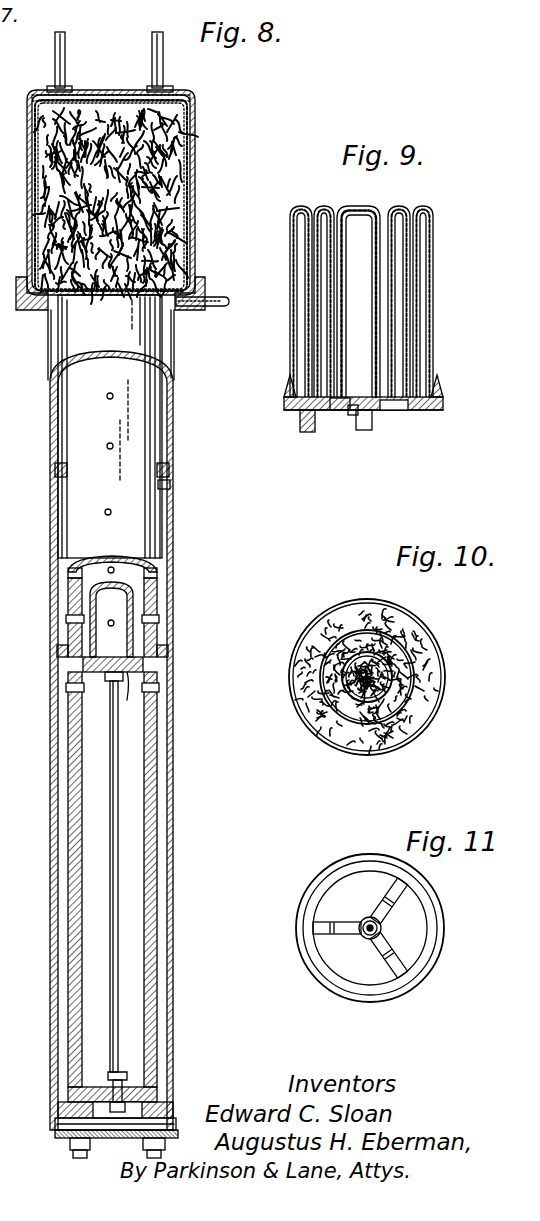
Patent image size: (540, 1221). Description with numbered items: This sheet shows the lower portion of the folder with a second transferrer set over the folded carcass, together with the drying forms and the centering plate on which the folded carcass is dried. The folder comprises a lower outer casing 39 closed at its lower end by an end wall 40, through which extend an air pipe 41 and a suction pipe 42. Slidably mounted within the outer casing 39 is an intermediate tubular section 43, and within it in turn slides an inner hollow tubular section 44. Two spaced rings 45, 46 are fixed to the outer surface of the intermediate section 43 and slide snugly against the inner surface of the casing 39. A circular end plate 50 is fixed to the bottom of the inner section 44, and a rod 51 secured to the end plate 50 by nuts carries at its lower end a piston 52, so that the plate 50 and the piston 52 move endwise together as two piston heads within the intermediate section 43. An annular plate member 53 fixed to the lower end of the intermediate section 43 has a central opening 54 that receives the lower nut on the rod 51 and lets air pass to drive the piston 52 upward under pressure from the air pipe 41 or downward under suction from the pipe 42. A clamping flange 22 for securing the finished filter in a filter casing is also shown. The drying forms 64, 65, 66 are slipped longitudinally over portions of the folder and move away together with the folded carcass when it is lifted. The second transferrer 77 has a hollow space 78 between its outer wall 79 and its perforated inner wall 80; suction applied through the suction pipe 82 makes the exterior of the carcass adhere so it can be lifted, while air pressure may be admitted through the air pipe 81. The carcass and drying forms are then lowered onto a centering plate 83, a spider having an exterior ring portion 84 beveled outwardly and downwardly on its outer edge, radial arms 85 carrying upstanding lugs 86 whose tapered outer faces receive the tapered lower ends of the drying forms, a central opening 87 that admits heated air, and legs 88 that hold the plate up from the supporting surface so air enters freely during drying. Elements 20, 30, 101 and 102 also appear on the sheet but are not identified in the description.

In FIG. 10, the heat storage unit 20 is at (418, 637).
In FIG. 8, the flange 22 is at (205, 288).
In FIG. 9, the flange 22 is at (440, 383).
In FIG. 8, the side tab 30 is at (218, 304).
In FIG. 8, the lower outer casing 39 is at (152, 329).
In FIG. 8, the end wall 40 is at (105, 1138).
In FIG. 8, the air pipe 41 is at (147, 1150).
In FIG. 8, the suction pipe 42 is at (72, 1150).
In FIG. 8, the intermediate tubular section 43 is at (140, 530).
In FIG. 8, the inner hollow tubular section 44 is at (100, 578).
In FIG. 8, the ring 45 is at (52, 468).
In FIG. 8, the ring 46 is at (54, 648).
In FIG. 8, the circular end plate 50 is at (129, 698).
In FIG. 8, the rod 51 is at (116, 778).
In FIG. 8, the piston 52 is at (98, 1085).
In FIG. 8, the annular plate member 53 is at (128, 1110).
In FIG. 8, the opening 54 is at (150, 1090).
In FIG. 9, the drying form 64 is at (343, 242).
In FIG. 9, the drying form 65 is at (322, 245).
In FIG. 9, the drying form 66 is at (433, 233).
In FIG. 8, the second transferrer 77 is at (196, 127).
In FIG. 8, the hollow space 78 is at (195, 97).
In FIG. 8, the outer wall 79 is at (193, 208).
In FIG. 8, the perforated inner wall 80 is at (183, 160).
In FIG. 8, the air pipe 81 is at (66, 42).
In FIG. 8, the suction pipe 82 is at (152, 42).
In FIG. 9, the centering plate 83 is at (338, 412).
In FIG. 11, the centering plate 83 is at (320, 950).
In FIG. 9, the exterior ring portion 84 is at (300, 415).
In FIG. 11, the exterior ring portion 84 is at (327, 882).
In FIG. 11, the radial arms 85 is at (392, 908).
In FIG. 9, the upstanding lugs 86 is at (312, 412).
In FIG. 11, the upstanding lugs 86 is at (382, 946).
In FIG. 9, the opening 87 is at (355, 414).
In FIG. 11, the opening 87 is at (384, 928).
In FIG. 9, the legs 88 is at (370, 420).
In FIG. 8, the collar 101 is at (176, 485).
In FIG. 8, the cross block 102 is at (152, 674).